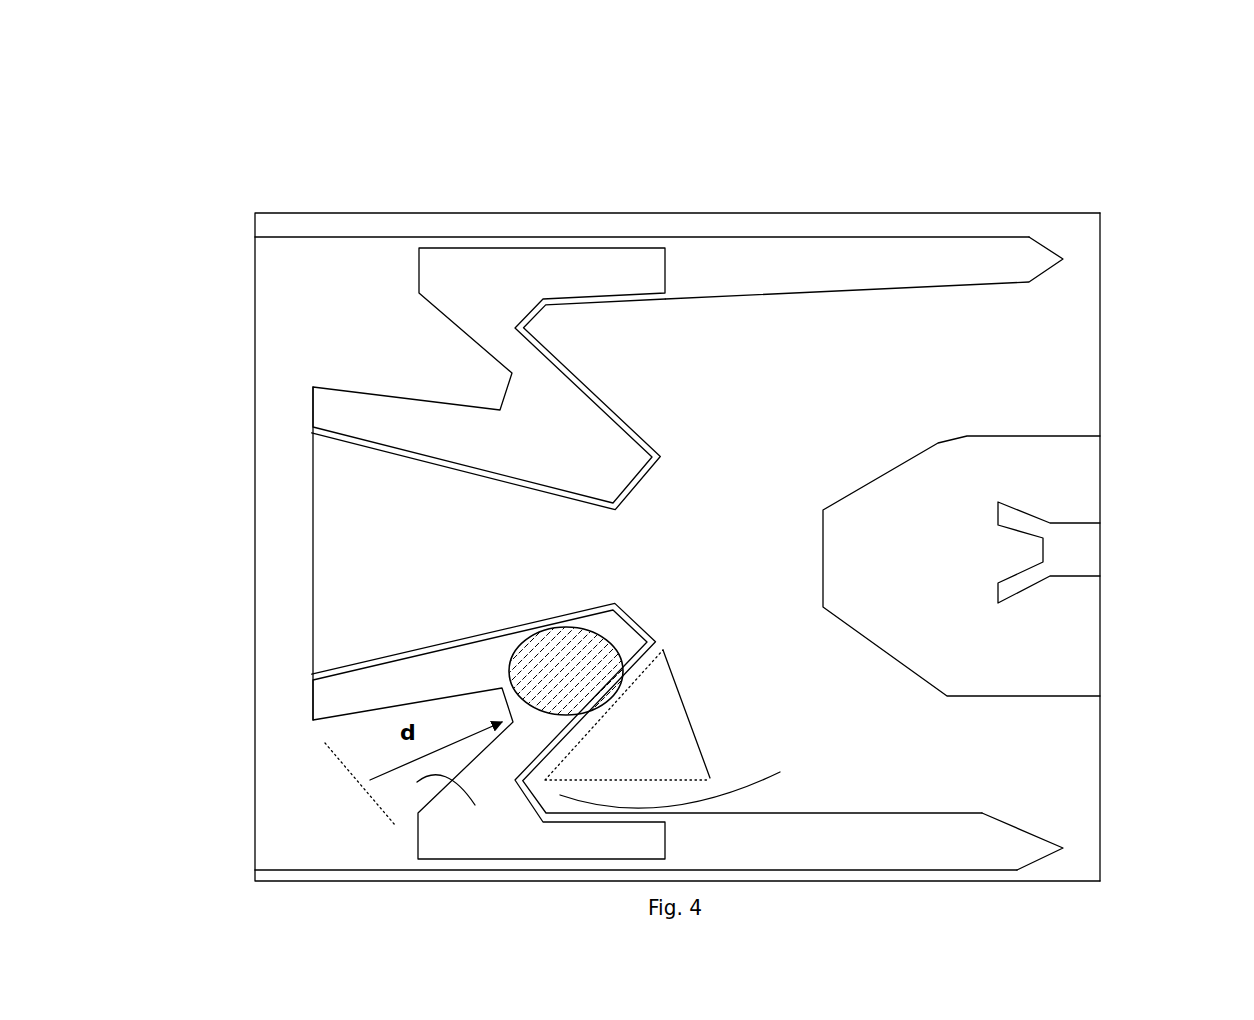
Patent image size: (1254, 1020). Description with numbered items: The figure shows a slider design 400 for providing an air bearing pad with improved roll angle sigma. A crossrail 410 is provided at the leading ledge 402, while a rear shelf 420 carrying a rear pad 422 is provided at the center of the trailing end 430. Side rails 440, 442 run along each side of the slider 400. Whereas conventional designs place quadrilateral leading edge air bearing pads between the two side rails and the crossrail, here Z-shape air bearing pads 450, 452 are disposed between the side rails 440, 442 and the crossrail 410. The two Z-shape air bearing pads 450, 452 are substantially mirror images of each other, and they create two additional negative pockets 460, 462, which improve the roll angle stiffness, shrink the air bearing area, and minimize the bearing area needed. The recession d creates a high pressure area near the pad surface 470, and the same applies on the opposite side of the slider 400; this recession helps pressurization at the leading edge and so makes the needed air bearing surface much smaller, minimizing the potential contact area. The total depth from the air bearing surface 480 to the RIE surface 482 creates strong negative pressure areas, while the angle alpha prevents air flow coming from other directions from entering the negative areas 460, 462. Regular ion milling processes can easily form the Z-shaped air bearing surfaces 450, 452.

The slider design 400 is at (255, 137).
The leading ledge 402 is at (230, 448).
The crossrail 410 is at (277, 540).
The rear shelf 420 is at (933, 495).
The rear pad 422 is at (1078, 552).
The trailing end 430 is at (1112, 612).
The side rail 440 is at (842, 828).
The side rail 442 is at (783, 277).
The Z-shape air bearing pad 450 is at (453, 667).
The Z-shape air bearing pad 452 is at (512, 437).
The negative pocket 460 is at (667, 725).
The negative pocket 462 is at (583, 333).
The pad surface 470 is at (597, 640).
The air bearing surface 480 is at (400, 784).
The RIE surface 482 is at (685, 779).